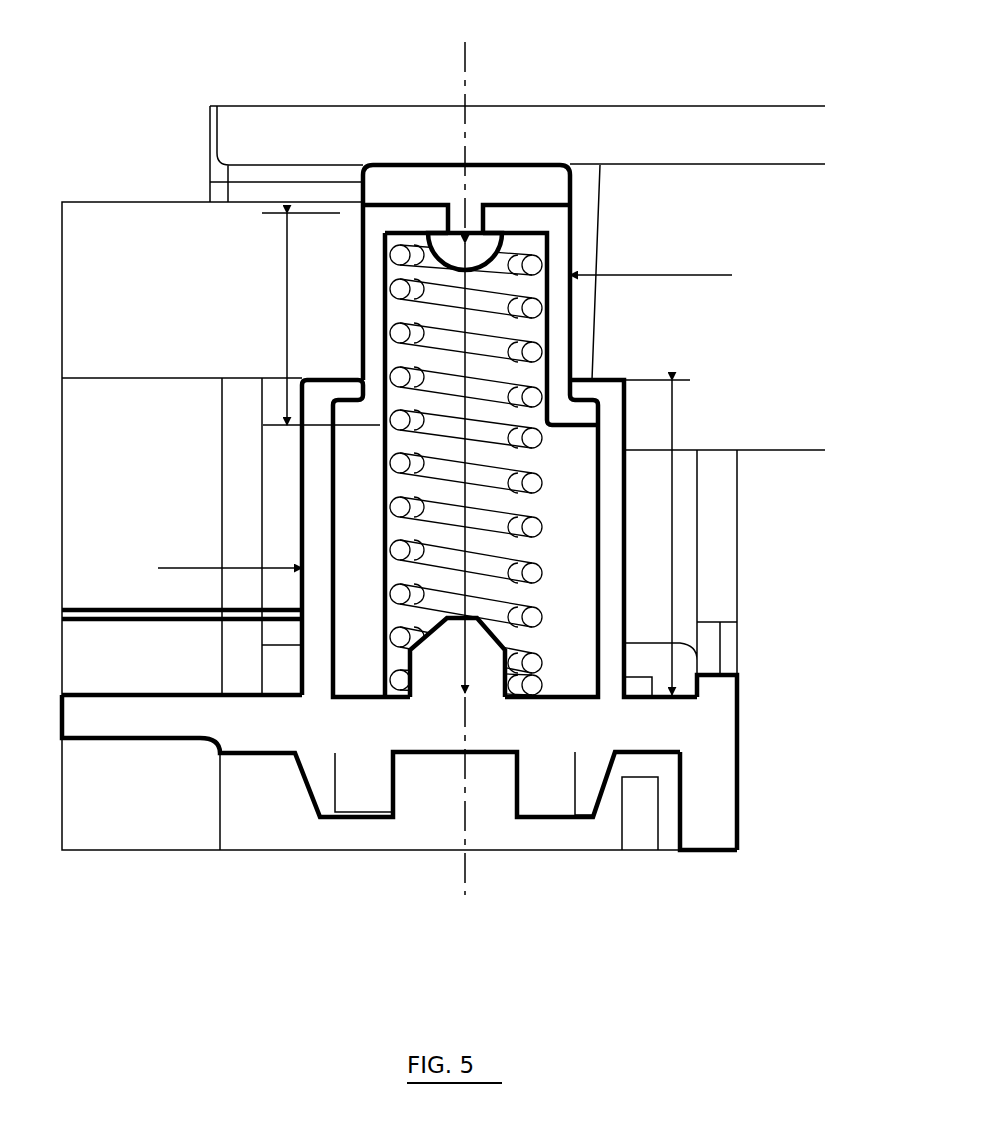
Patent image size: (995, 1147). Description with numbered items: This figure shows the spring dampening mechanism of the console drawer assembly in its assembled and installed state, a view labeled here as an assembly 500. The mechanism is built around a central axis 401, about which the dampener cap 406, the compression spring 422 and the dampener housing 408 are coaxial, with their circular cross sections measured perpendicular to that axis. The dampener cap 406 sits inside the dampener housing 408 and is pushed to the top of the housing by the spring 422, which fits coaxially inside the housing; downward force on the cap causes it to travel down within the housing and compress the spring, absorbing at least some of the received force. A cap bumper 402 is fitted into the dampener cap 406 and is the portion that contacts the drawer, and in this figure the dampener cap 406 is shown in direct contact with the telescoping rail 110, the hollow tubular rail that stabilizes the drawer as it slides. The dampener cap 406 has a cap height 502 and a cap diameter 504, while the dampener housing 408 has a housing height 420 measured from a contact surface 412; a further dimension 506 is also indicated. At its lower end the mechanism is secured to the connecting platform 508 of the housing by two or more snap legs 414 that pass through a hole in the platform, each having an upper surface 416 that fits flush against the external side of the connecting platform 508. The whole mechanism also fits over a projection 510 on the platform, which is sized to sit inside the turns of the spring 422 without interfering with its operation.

The telescoping rail 110 is at (120, 218).
The central axis 401 is at (462, 68).
The cap bumper 402 is at (538, 182).
The dampener cap 406 is at (560, 237).
The dampener housing 408 is at (600, 612).
The contact surface 412 is at (580, 697).
The snap legs 414 is at (590, 788).
The upper surface 416 is at (600, 752).
The housing height 420 is at (675, 513).
The compression spring 422 is at (588, 412).
The valve assembly 500 is at (587, 933).
The cap height 502 is at (287, 268).
The cap diameter 504 is at (710, 268).
The radial dimension 506 is at (168, 567).
The connecting platform 508 is at (258, 733).
The projection 510 is at (433, 687).